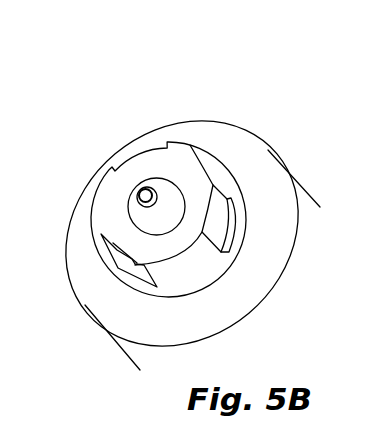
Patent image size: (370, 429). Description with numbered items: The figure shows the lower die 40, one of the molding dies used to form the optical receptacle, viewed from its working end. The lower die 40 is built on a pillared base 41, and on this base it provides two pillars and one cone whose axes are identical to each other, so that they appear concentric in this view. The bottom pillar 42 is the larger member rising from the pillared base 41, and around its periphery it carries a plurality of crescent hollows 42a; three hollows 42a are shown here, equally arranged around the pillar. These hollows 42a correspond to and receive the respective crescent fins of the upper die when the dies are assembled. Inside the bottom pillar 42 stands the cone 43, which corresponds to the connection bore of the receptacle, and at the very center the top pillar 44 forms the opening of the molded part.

The lower die 40 is at (249, 90).
The pillared base 41 is at (252, 166).
The bottom pillar 42 is at (196, 165).
The crescent hollows 42a is at (130, 154).
The cone 43 is at (157, 180).
The top pillar 44 is at (134, 193).